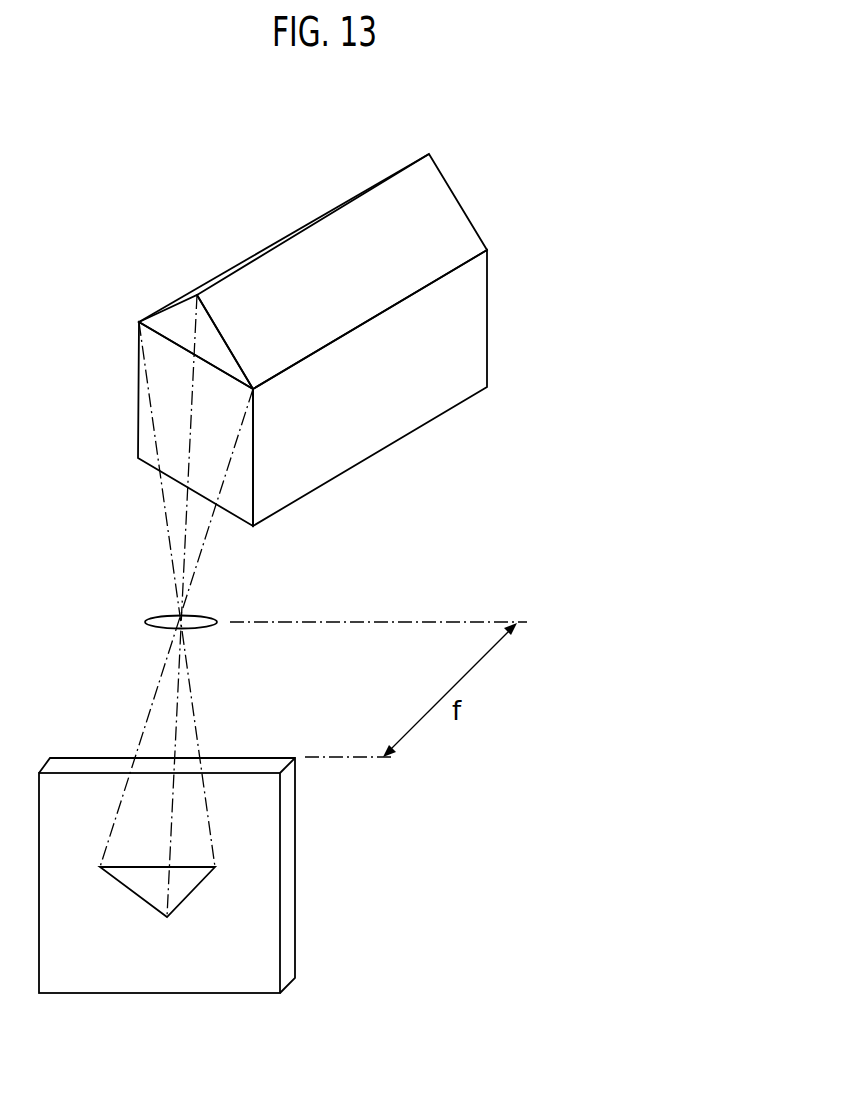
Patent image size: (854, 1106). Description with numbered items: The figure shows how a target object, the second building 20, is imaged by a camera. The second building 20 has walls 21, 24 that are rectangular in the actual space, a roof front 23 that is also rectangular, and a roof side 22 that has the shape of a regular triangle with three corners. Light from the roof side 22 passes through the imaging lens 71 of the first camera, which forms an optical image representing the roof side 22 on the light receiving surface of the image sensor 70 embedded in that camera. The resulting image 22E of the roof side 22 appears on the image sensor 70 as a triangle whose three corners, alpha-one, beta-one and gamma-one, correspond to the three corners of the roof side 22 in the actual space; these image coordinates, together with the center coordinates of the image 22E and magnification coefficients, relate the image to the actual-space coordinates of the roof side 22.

The second building 20 is at (320, 324).
The wall 21 is at (143, 438).
The roof side 22 is at (178, 323).
The roof front 23 is at (443, 220).
The wall 24 is at (475, 342).
The image sensor 70 is at (287, 907).
The imaging lens 71 is at (192, 613).
The image of the roof side 22E is at (187, 897).